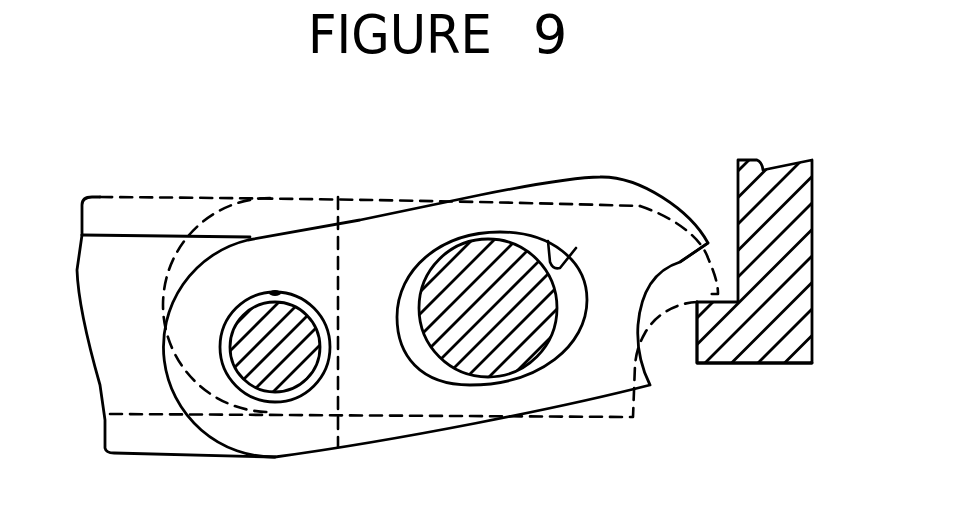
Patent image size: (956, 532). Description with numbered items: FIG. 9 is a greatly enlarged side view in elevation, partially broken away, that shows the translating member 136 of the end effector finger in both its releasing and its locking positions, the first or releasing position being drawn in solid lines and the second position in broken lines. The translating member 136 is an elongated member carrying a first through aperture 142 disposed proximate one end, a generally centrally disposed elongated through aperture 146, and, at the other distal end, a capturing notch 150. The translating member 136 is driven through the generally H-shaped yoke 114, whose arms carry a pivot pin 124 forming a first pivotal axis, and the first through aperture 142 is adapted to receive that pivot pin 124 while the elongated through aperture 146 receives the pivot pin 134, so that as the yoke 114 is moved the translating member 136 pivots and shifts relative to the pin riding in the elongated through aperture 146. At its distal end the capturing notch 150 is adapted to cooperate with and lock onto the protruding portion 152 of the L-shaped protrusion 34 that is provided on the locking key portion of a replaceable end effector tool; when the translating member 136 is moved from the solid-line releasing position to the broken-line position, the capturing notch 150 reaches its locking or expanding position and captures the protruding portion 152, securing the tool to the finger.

The yoke 114 is at (142, 213).
The pivot pin 124 is at (260, 313).
The first through aperture 142 is at (277, 293).
The translating member 136 is at (373, 243).
The pivot pin 134 is at (467, 253).
The elongated through aperture 146 is at (570, 263).
The L-shaped protrusion 34 is at (803, 188).
The capturing notch 150 is at (681, 261).
The protruding portion 152 is at (717, 352).